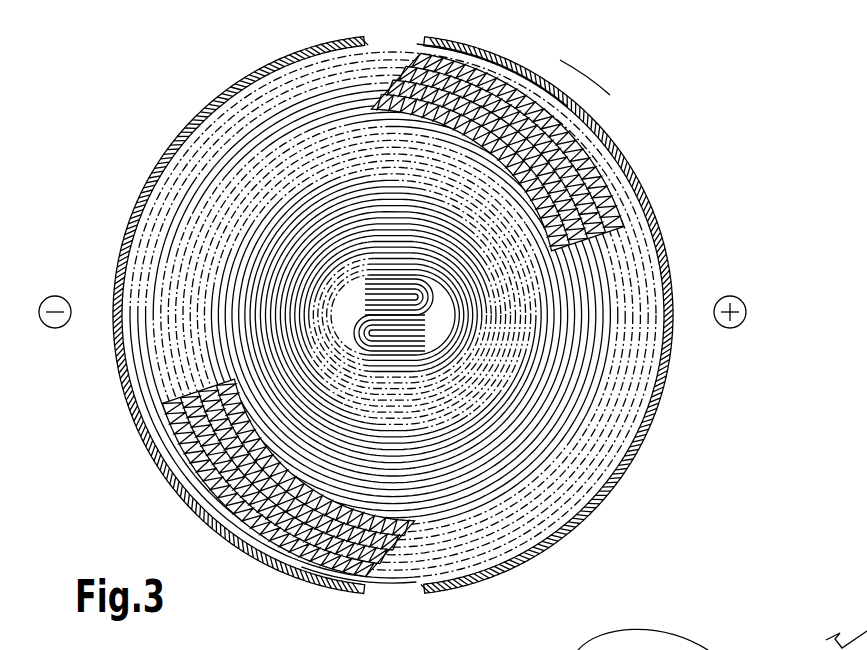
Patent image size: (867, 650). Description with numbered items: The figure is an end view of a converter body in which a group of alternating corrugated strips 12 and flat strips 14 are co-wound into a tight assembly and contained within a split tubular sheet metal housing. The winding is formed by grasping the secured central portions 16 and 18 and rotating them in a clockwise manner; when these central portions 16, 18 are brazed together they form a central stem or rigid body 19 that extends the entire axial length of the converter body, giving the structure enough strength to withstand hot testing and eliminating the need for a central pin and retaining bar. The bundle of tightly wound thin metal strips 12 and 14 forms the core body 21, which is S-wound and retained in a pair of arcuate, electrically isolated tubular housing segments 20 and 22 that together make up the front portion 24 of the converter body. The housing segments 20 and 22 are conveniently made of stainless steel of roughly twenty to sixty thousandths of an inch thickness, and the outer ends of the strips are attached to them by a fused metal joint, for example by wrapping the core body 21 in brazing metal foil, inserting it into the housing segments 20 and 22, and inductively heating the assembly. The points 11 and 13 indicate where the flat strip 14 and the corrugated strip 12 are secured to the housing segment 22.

The point 11 is at (318, 568).
The corrugated strip 12 is at (517, 178).
The point 13 is at (472, 44).
The flat strip 14 is at (540, 206).
The central portion 16 is at (395, 290).
The central portion 18 is at (383, 285).
The central stem 19 is at (407, 329).
The tubular housing segment 20 is at (622, 158).
The core body 21 is at (560, 393).
The tubular housing segment 22 is at (167, 486).
The front portion 24 is at (588, 86).